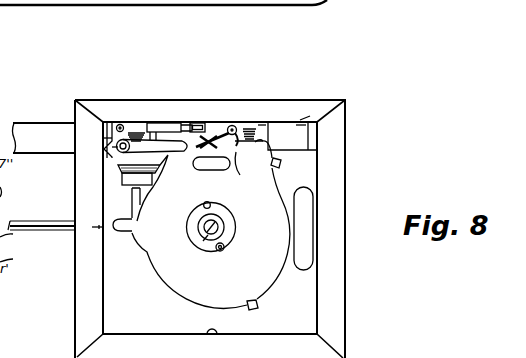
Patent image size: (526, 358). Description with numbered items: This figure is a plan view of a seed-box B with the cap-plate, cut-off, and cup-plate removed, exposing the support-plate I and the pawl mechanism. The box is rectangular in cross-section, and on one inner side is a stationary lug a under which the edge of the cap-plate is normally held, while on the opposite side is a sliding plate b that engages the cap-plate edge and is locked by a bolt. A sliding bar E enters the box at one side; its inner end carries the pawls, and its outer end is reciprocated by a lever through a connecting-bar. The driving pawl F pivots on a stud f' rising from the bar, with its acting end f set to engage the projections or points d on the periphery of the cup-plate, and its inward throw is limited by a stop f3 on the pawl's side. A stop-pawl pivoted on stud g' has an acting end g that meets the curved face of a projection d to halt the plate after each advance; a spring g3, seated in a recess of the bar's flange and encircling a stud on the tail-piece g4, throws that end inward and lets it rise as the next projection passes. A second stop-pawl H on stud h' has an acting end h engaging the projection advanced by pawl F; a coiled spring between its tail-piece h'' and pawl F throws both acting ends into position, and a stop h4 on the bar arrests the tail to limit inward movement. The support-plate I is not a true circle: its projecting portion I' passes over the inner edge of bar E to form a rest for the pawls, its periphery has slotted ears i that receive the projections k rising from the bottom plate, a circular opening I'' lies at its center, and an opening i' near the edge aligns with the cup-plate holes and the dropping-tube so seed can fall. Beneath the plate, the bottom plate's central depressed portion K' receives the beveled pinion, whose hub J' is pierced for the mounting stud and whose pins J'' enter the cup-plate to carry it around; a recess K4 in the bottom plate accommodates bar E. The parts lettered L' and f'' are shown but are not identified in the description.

The sliding bar E is at (44, 138).
The rod L' is at (41, 236).
The projections k is at (297, 167).
The acting end h is at (81, 164).
The tail-piece h'' is at (118, 88).
The stop-pawl H is at (111, 127).
The acting end f is at (167, 116).
The stud or pivot h' is at (146, 109).
The stop h4 is at (160, 125).
The stop f3 is at (170, 125).
The pawl F is at (188, 125).
The stationary lug a is at (231, 124).
The projections or points d is at (227, 127).
The acting end g is at (250, 107).
The stud or pin g' is at (280, 98).
The tail-piece g4 is at (280, 123).
The spring g3 is at (302, 119).
The stud or pin f' is at (90, 141).
The hook arm f'' is at (75, 166).
The central circular depressed portion K' is at (292, 136).
The plate I is at (206, 224).
The projections i is at (189, 267).
The opening i' is at (211, 164).
The projecting portion I' is at (245, 163).
The seed-box B is at (314, 228).
The circular opening I'' is at (220, 227).
The hub or boss J' is at (189, 232).
The pins J'' is at (225, 229).
The recess K4 is at (204, 237).
The sliding plate b is at (209, 332).